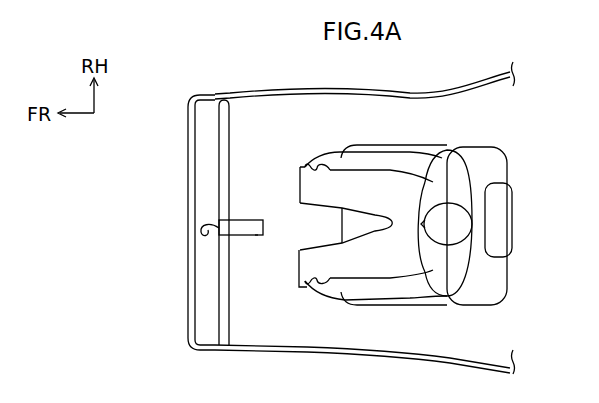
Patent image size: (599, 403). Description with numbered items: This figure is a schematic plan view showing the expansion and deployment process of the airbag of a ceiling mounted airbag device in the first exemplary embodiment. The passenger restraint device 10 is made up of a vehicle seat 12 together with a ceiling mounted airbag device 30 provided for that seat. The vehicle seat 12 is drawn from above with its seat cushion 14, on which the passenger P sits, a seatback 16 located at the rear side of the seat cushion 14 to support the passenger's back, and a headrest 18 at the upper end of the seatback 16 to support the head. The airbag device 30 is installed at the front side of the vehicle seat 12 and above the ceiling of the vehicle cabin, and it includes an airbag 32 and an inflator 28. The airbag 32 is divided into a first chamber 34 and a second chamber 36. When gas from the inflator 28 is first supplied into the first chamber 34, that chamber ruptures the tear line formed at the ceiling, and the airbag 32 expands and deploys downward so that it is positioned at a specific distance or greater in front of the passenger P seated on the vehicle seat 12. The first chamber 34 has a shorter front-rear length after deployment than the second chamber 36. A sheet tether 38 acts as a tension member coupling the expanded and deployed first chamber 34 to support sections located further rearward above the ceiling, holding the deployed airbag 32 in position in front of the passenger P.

The passenger restraint device 10 is at (262, 118).
The vehicle seat 12 is at (508, 166).
The seat cushion 14 is at (353, 228).
The seatback 16 is at (497, 272).
The headrest 18 is at (512, 218).
The inflator 28 is at (242, 222).
The ceiling mounted airbag device 30 is at (255, 238).
The airbag 32 is at (209, 95).
The first chamber 34 is at (197, 284).
The second chamber 36 is at (234, 122).
The sheet tether 38 is at (408, 92).
The passenger P is at (421, 145).